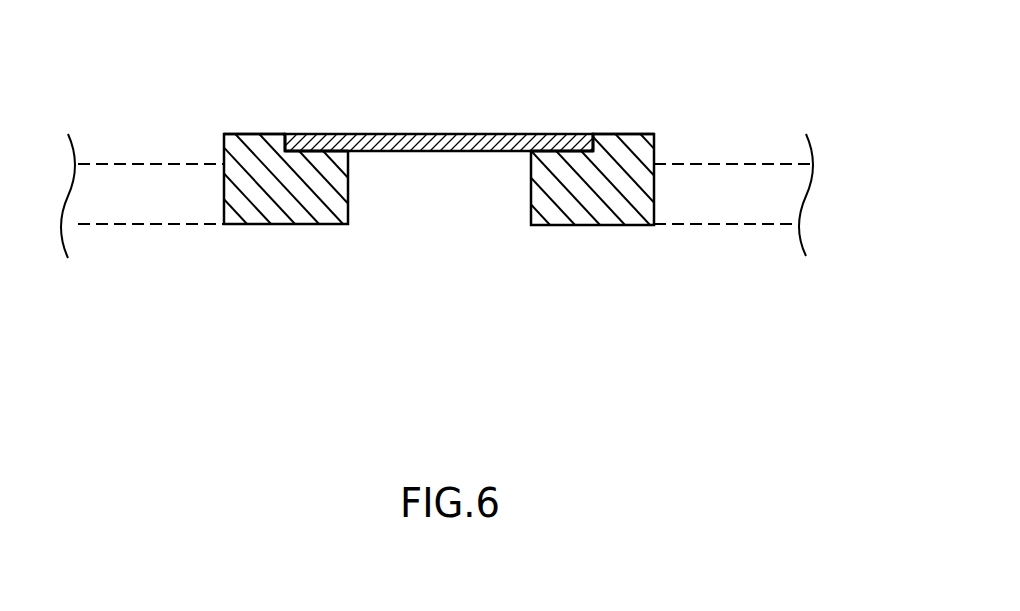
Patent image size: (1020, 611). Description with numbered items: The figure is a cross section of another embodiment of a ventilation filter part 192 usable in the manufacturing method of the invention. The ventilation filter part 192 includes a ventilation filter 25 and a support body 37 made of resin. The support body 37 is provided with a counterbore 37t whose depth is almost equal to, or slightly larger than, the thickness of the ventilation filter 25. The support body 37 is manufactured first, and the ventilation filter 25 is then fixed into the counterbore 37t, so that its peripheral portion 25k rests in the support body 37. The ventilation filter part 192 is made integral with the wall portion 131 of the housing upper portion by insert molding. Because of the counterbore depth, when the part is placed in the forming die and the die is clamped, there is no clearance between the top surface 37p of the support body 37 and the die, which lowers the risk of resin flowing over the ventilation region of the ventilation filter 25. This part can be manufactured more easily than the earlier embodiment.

The ventilation filter part 192 is at (254, 73).
The ventilation filter 25 is at (453, 134).
The peripheral portion 25k is at (327, 134).
The support body 37 is at (278, 213).
The counterbore 37t is at (578, 134).
The top surface 37p is at (642, 134).
The wall portion 131 is at (792, 191).